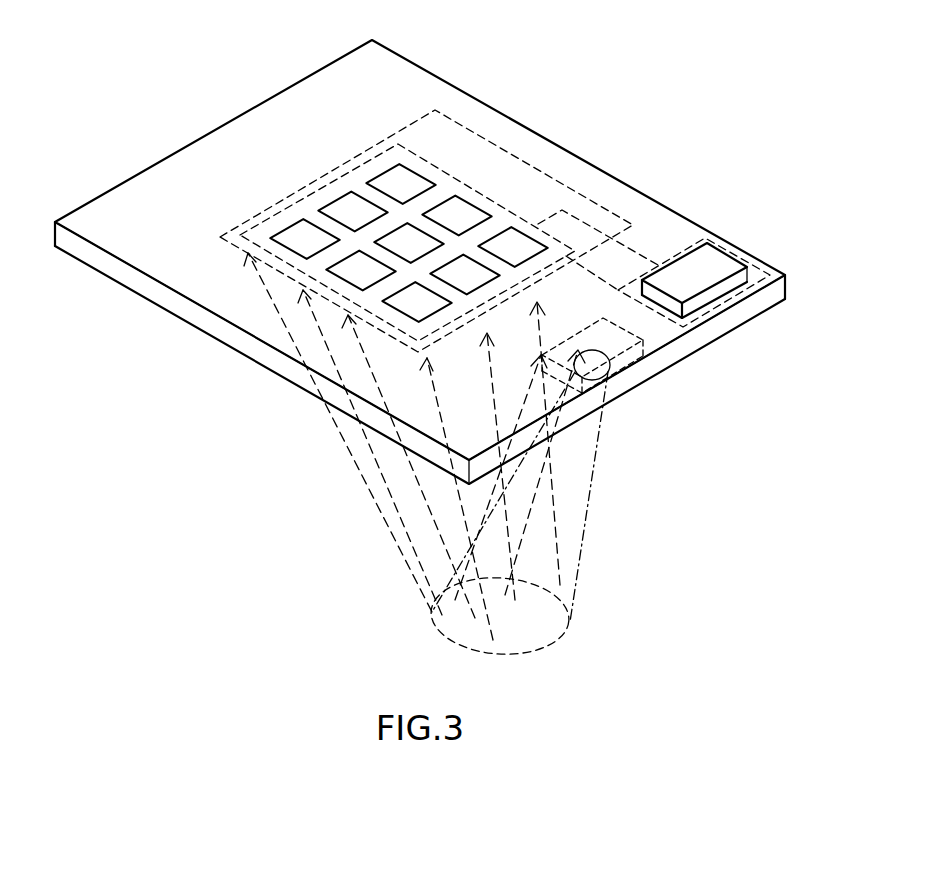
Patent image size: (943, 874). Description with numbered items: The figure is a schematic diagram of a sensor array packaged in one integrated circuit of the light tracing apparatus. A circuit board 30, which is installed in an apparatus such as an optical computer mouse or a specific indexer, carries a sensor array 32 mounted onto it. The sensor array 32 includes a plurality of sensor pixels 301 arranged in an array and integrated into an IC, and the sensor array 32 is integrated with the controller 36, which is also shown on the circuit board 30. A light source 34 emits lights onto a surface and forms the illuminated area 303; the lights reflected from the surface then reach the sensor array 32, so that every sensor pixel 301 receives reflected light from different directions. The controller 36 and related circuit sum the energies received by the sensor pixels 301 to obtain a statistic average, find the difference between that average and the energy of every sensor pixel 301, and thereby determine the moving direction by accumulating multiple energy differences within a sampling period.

The circuit board 30 is at (293, 84).
The sensor array 32 is at (313, 190).
The sensor pixel 301 is at (465, 217).
The controller 36 is at (717, 265).
The light source 34 is at (622, 380).
The illuminated area 303 is at (582, 636).